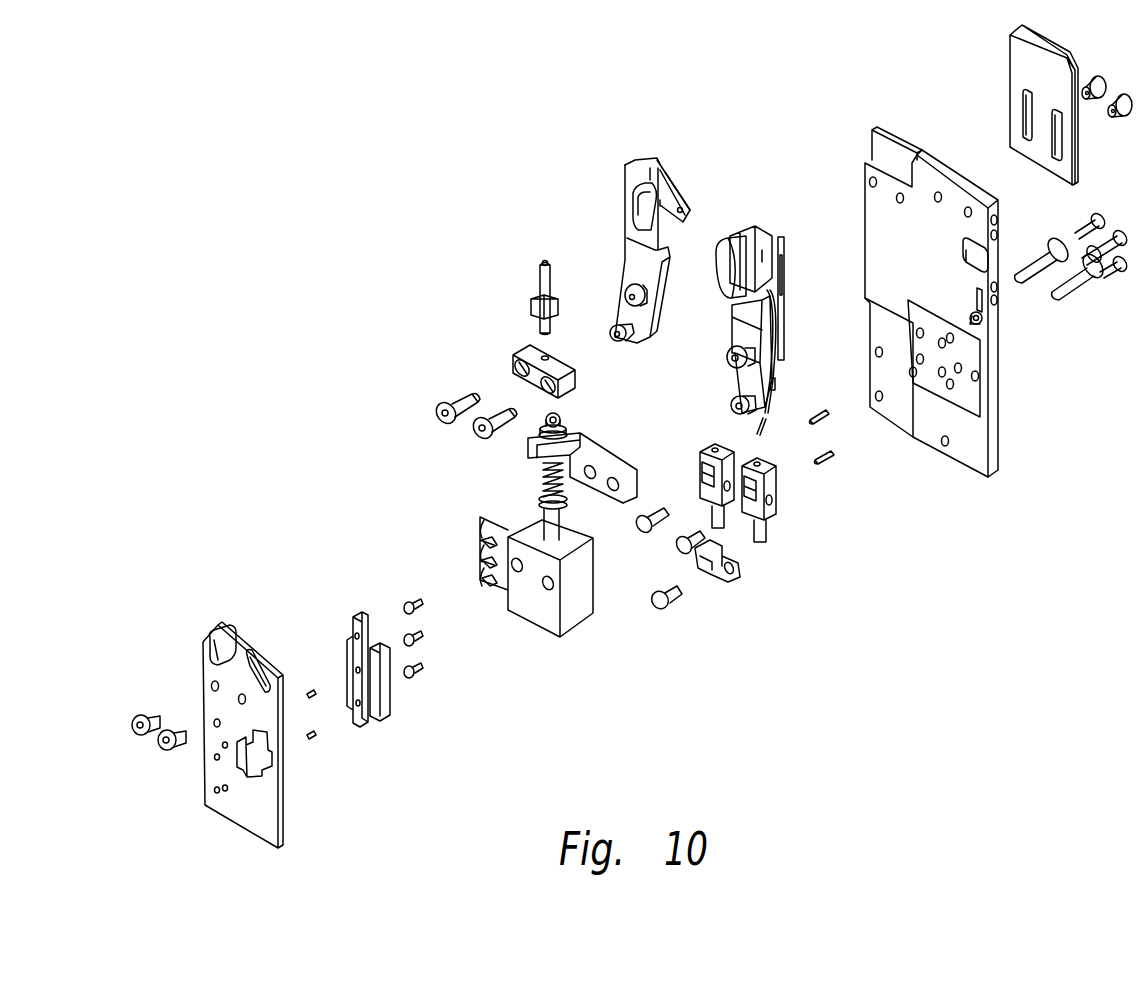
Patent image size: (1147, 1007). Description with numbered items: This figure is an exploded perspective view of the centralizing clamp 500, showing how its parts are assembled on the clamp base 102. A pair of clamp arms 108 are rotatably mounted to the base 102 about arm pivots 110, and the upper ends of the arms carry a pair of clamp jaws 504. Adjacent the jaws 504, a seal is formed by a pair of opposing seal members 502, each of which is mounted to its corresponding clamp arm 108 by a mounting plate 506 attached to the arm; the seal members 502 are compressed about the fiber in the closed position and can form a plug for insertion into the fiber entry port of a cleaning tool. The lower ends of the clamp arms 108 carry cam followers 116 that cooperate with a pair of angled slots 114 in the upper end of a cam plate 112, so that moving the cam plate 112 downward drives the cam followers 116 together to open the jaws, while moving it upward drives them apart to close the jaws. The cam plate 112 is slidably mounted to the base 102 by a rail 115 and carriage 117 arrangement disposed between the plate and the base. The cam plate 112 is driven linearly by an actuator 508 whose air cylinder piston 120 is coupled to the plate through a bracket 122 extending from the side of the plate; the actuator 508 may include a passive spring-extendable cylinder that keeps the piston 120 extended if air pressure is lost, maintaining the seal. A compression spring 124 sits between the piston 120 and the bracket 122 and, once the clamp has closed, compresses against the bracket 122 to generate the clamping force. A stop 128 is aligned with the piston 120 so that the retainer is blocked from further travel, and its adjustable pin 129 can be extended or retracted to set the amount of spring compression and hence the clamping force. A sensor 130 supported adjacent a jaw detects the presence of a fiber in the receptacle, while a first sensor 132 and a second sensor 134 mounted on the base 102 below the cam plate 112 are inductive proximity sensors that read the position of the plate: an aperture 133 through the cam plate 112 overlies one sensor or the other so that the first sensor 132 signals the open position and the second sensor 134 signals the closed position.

The centralizing clamp 500 is at (395, 270).
The clamp base 102 is at (993, 425).
The clamp arms 108 is at (626, 245).
The arm pivots 110 is at (630, 287).
The cam plate 112 is at (255, 830).
The angled slots 114 is at (256, 652).
The rail 115 is at (362, 610).
The cam followers 116 is at (611, 327).
The carriage 117 is at (380, 722).
The piston 120 is at (562, 516).
The bracket 122 is at (530, 457).
The compression spring 124 is at (540, 478).
The stop 128 is at (520, 395).
The adjustable pin 129 is at (544, 262).
The sensor 130 is at (775, 273).
The first sensor 132 is at (702, 460).
The aperture 133 is at (264, 752).
The second sensor 134 is at (763, 489).
The seal members 502 is at (636, 205).
The clamp jaws 504 is at (744, 222).
The mounting plate 506 is at (625, 172).
The actuator 508 is at (535, 605).